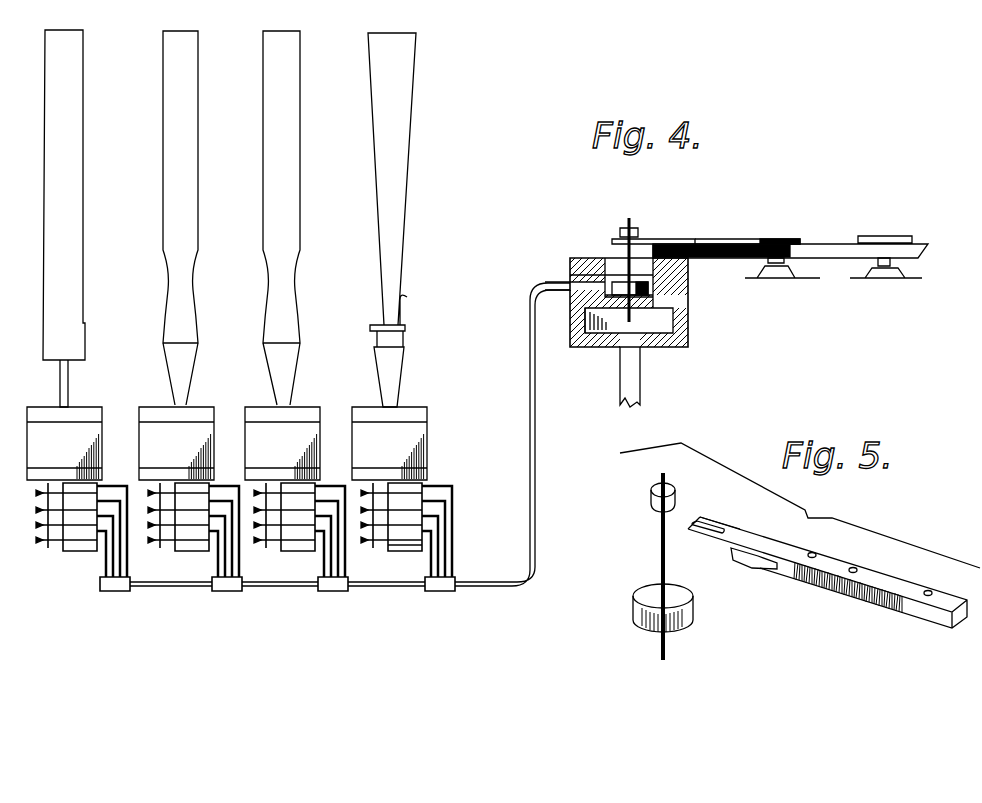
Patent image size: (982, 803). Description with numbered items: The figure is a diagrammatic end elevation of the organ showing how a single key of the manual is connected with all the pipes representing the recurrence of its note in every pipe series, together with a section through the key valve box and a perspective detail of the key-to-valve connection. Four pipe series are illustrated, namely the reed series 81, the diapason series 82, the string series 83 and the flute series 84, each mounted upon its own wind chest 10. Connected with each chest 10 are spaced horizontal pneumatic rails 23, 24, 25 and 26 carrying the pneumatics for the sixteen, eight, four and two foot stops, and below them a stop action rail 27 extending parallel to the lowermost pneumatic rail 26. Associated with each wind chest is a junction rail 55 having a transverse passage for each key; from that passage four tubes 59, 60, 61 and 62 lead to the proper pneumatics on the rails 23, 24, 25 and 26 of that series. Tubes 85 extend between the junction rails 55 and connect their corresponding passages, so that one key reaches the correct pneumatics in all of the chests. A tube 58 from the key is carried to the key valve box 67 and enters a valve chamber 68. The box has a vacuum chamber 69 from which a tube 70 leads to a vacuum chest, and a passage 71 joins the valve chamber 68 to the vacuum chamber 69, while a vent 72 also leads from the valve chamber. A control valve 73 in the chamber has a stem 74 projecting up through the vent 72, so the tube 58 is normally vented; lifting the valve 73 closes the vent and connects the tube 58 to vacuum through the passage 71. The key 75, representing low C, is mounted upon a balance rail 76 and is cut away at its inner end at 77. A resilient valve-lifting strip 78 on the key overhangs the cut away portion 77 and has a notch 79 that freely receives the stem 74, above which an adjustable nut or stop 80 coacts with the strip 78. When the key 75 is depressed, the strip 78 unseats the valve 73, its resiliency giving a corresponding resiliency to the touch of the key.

In FIG. 4, the wind chest 10 is at (69, 412).
In FIG. 4, the pneumatic rail 23 is at (416, 490).
In FIG. 4, the pneumatic rail 24 is at (416, 502).
In FIG. 4, the pneumatic rail 25 is at (416, 515).
In FIG. 4, the pneumatic rail 26 is at (416, 530).
In FIG. 4, the stop action rail 27 is at (416, 545).
In FIG. 4, the junction rail 55 is at (123, 591).
In FIG. 4, the tube 58 is at (533, 456).
In FIG. 4, the tube 59 is at (104, 556).
In FIG. 4, the tube 60 is at (101, 559).
In FIG. 4, the tube 61 is at (106, 566).
In FIG. 4, the tube 62 is at (112, 570).
In FIG. 4, the key valve box 67 is at (683, 340).
In FIG. 4, the valve chamber 68 is at (611, 262).
In FIG. 4, the vacuum chamber 69 is at (584, 345).
In FIG. 4, the tube 70 is at (638, 387).
In FIG. 4, the passage 71 is at (633, 312).
In FIG. 4, the vent 72 is at (624, 258).
In FIG. 4, the control valve 73 is at (688, 288).
In FIG. 5, the control valve 73 is at (640, 608).
In FIG. 4, the stem 74 is at (633, 218).
In FIG. 5, the stem 74 is at (661, 550).
In FIG. 4, the key 75 is at (802, 248).
In FIG. 5, the key 75 is at (893, 605).
In FIG. 4, the balance rail 76 is at (778, 272).
In FIG. 4, the cut away portion 77 is at (745, 242).
In FIG. 5, the cut away portion 77 is at (757, 558).
In FIG. 4, the resilient valve-lifting strip 78 is at (783, 240).
In FIG. 5, the resilient valve-lifting strip 78 is at (765, 523).
In FIG. 5, the notch 79 is at (712, 520).
In FIG. 4, the nut or stop 80 is at (641, 234).
In FIG. 5, the nut or stop 80 is at (655, 492).
In FIG. 4, the reed pipe series 81 is at (405, 176).
In FIG. 4, the diapason pipe series 82 is at (300, 187).
In FIG. 4, the string pipe series 83 is at (196, 184).
In FIG. 4, the flute pipe series 84 is at (80, 185).
In FIG. 4, the tubes 85 is at (177, 585).